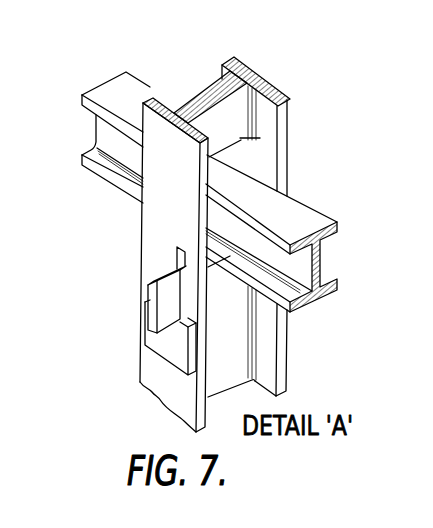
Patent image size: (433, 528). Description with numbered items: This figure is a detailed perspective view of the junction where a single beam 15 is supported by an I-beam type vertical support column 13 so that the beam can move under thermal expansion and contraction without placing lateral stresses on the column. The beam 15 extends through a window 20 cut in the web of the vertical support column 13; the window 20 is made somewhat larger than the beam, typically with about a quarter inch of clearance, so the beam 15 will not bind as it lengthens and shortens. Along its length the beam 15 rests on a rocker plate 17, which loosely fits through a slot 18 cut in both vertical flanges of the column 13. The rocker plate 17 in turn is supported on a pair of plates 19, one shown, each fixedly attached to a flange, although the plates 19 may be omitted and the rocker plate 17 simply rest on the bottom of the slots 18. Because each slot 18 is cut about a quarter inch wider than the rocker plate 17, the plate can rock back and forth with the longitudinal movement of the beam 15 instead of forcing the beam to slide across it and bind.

The vertical support column 13 is at (290, 133).
The beam 15 is at (306, 214).
The rocker plate 17 is at (148, 283).
The slot 18 is at (177, 259).
The plate 19 is at (163, 356).
The window 20 is at (240, 138).